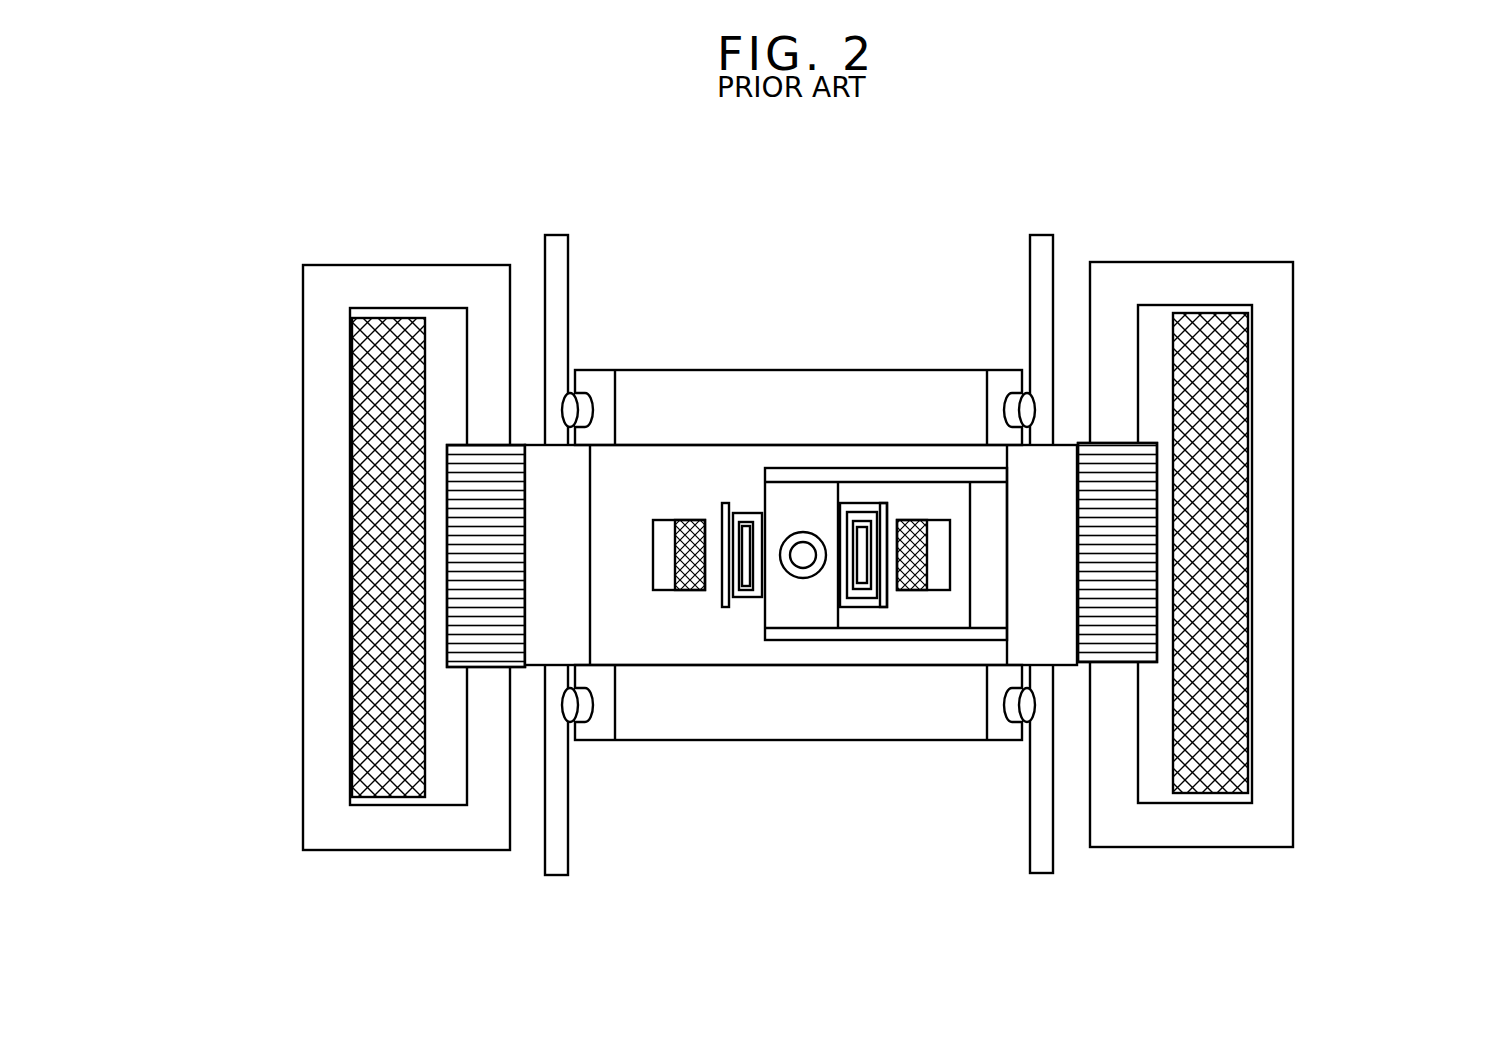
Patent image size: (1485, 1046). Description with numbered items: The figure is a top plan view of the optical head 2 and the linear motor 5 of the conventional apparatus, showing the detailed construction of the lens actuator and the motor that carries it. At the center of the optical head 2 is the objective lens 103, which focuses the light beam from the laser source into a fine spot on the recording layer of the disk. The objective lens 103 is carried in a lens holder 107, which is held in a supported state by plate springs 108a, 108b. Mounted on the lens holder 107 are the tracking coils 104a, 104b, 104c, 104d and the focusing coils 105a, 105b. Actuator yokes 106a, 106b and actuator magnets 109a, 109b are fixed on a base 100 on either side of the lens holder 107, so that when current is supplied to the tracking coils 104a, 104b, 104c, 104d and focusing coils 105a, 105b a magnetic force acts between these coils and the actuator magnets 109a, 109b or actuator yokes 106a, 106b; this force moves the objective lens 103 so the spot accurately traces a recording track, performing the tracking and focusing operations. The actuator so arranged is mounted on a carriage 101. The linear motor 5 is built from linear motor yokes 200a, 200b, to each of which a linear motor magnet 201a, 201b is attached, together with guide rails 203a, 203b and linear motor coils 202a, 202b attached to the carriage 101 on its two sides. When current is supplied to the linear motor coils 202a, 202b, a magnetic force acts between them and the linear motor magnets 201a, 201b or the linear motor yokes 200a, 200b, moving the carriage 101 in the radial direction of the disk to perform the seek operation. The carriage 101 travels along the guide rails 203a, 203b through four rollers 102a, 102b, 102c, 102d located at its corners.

The optical head 2 is at (1025, 205).
The linear motor 5 is at (203, 750).
The base 100 is at (720, 653).
The carriage 101 is at (642, 385).
The roller 102a is at (582, 395).
The roller 102b is at (583, 712).
The roller 102c is at (1022, 380).
The roller 102d is at (1025, 712).
The objective lens 103 is at (803, 547).
The tracking coil 104a is at (724, 560).
The tracking coil 104b is at (748, 505).
The tracking coil 104c is at (883, 503).
The tracking coil 104d is at (853, 503).
The focusing coil 105a is at (748, 512).
The focusing coil 105b is at (857, 510).
The actuator yoke 106a is at (658, 545).
The actuator yoke 106b is at (942, 580).
The lens holder 107 is at (787, 600).
The plate spring 108a is at (930, 473).
The plate spring 108b is at (850, 633).
The actuator magnet 109a is at (687, 588).
The actuator magnet 109b is at (908, 593).
The linear motor yoke 200a is at (332, 492).
The linear motor yoke 200b is at (1263, 616).
The linear motor magnet 201a is at (360, 735).
The linear motor magnet 201b is at (1213, 722).
The linear motor coil 202a is at (458, 593).
The linear motor coil 202b is at (1133, 540).
The guide rail 203a is at (553, 350).
The guide rail 203b is at (1043, 288).